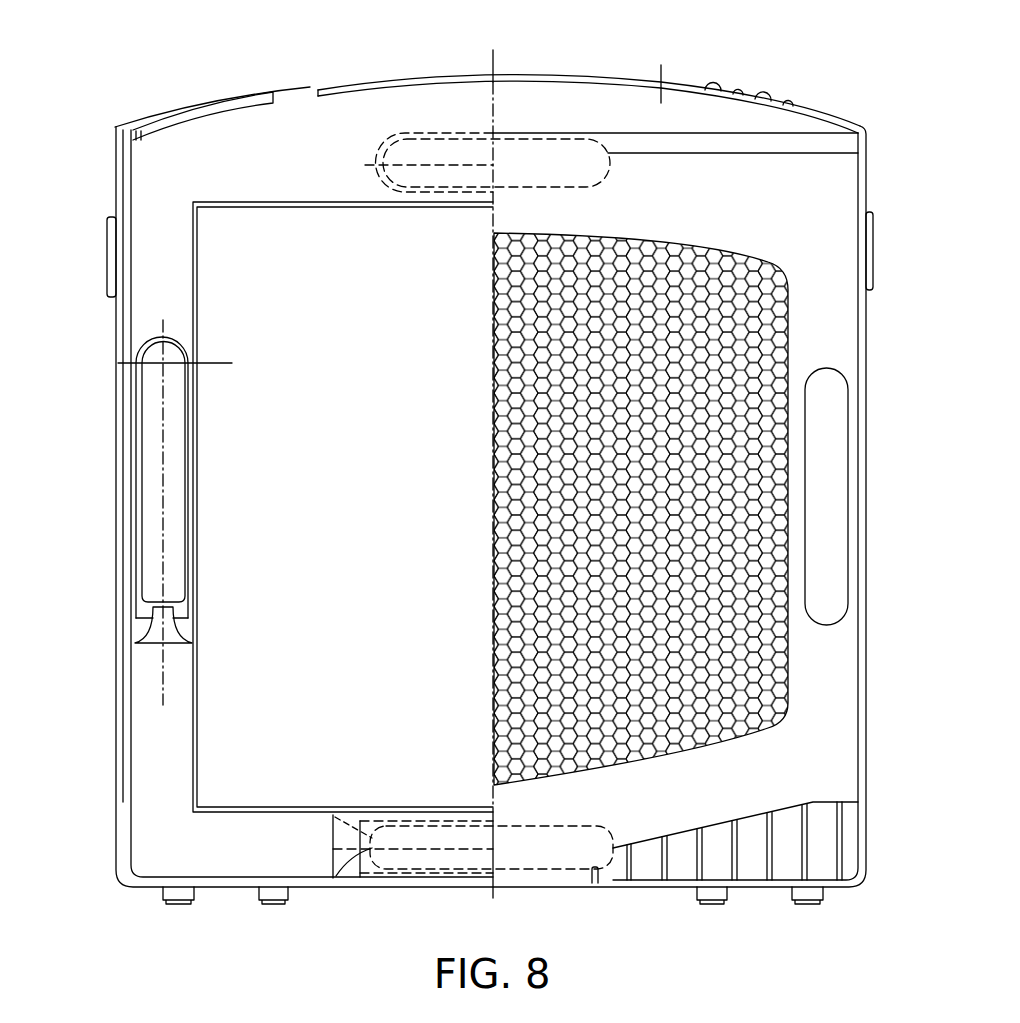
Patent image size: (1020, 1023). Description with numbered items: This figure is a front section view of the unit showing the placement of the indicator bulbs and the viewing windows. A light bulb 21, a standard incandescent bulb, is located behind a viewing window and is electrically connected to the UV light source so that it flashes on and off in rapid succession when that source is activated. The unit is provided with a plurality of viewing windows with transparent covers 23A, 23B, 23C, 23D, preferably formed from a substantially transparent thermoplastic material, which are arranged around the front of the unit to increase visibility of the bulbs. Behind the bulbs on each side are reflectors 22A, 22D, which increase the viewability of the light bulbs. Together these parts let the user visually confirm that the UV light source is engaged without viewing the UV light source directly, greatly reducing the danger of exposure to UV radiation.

The light bulb 21 is at (155, 443).
The viewing window with transparent cover 23A is at (150, 485).
The reflector 22A is at (143, 608).
The viewing window with transparent cover 23B is at (838, 452).
The viewing window with transparent cover 23C is at (552, 147).
The viewing window with transparent cover 23D is at (568, 858).
The reflector 22D is at (372, 850).